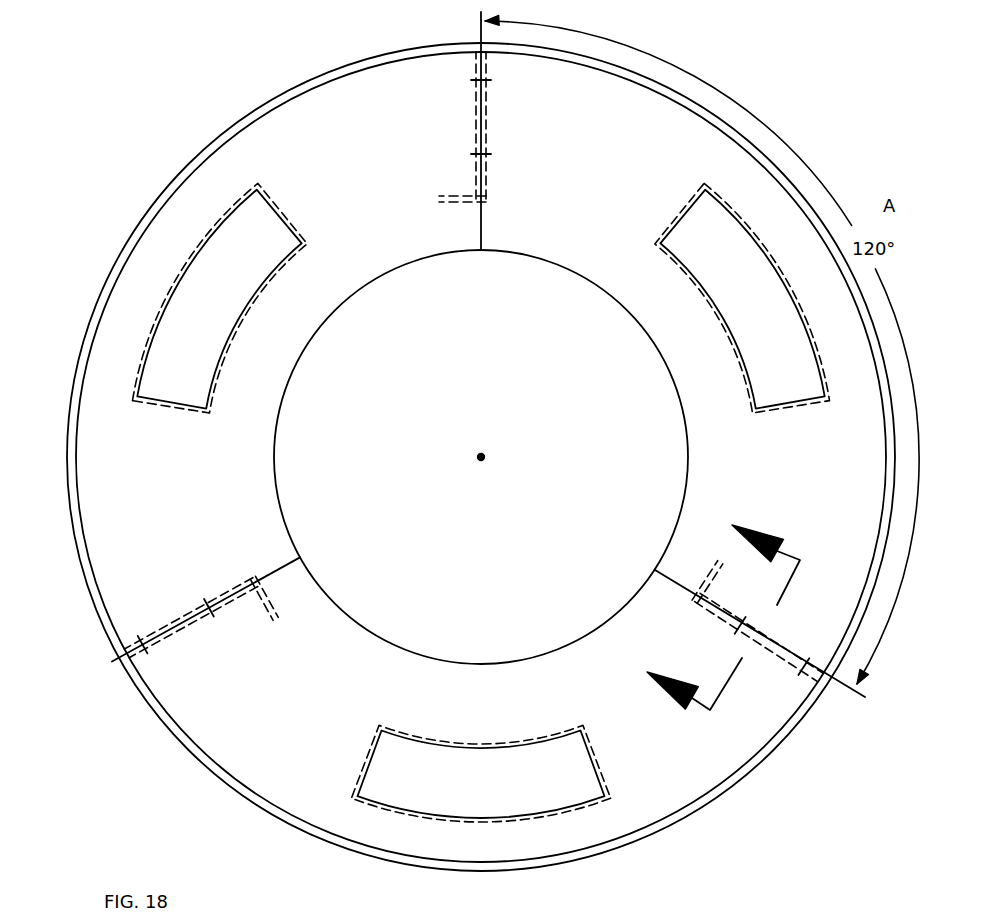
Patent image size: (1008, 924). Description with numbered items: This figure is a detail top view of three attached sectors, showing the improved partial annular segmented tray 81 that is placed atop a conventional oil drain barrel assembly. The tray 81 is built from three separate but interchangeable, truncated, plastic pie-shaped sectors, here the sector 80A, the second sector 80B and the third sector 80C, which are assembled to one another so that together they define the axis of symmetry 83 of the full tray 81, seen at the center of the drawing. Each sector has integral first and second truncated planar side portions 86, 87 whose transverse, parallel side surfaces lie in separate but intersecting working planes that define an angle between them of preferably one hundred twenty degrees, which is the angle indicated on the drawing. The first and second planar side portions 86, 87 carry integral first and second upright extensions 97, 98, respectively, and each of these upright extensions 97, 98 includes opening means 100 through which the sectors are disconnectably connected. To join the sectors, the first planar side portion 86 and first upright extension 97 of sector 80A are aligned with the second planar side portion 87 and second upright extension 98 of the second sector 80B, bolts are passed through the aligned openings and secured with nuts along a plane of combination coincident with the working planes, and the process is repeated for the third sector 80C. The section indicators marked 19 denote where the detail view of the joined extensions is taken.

The partial annular segmented tray 81 is at (145, 166).
The opening means 100 is at (132, 724).
The axis of symmetry 83 is at (484, 454).
The sector 80A is at (610, 234).
The second sector 80B is at (373, 258).
The third sector 80C is at (555, 833).
The first upright extension 97 is at (487, 173).
The first planar side portion 86 is at (496, 120).
The second upright extension 98 is at (462, 195).
The second planar side portion 87 is at (465, 145).
The section line for FIG. 19 is at (713, 617).